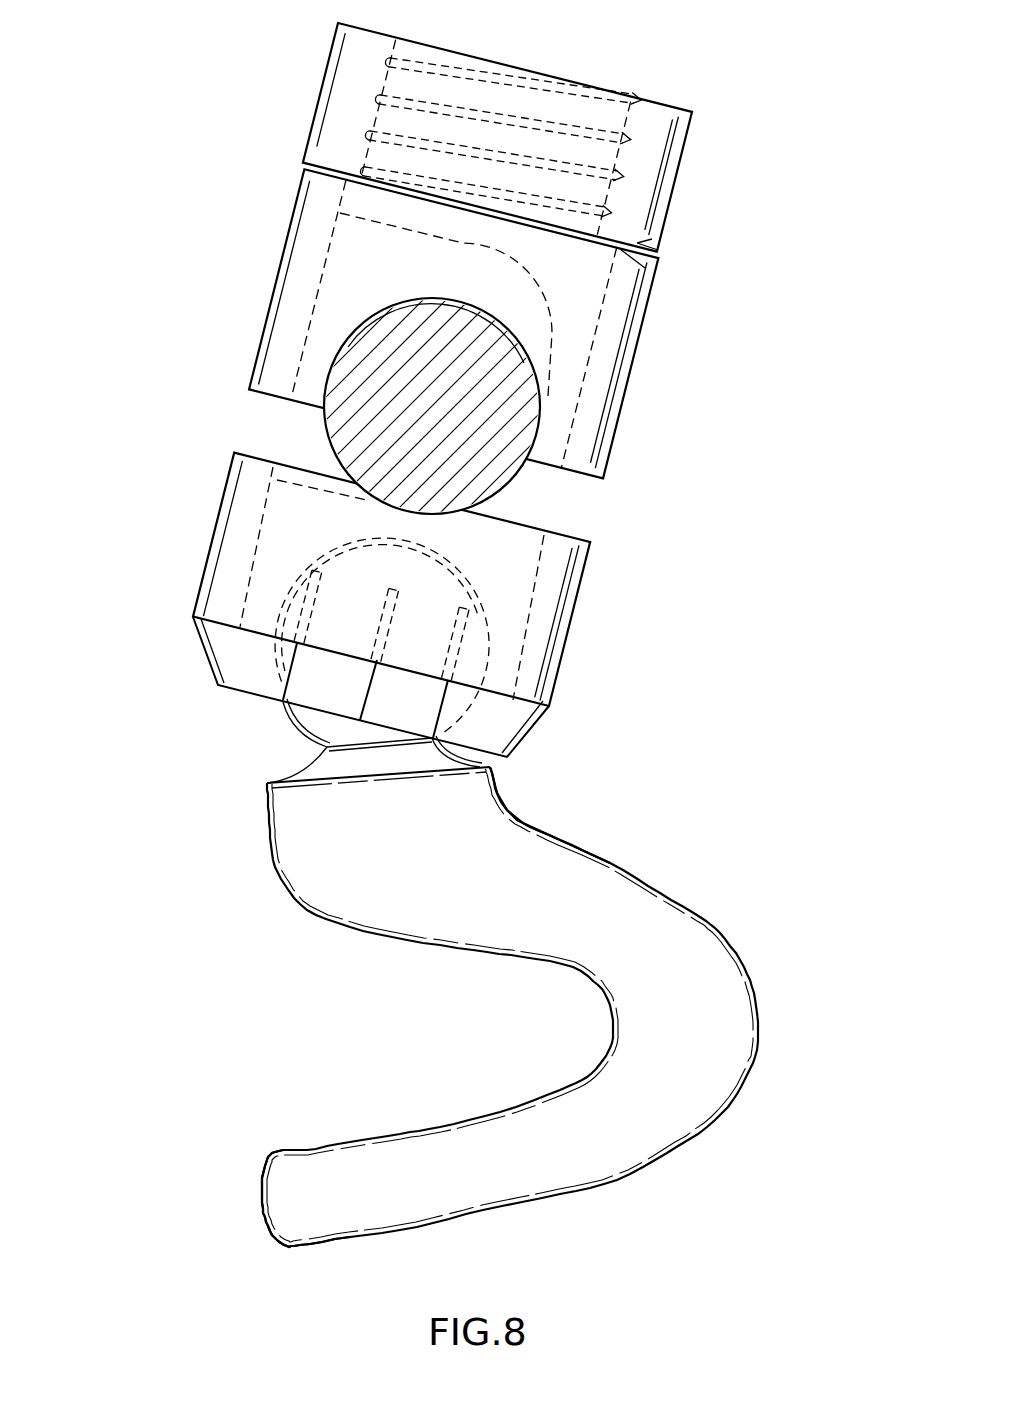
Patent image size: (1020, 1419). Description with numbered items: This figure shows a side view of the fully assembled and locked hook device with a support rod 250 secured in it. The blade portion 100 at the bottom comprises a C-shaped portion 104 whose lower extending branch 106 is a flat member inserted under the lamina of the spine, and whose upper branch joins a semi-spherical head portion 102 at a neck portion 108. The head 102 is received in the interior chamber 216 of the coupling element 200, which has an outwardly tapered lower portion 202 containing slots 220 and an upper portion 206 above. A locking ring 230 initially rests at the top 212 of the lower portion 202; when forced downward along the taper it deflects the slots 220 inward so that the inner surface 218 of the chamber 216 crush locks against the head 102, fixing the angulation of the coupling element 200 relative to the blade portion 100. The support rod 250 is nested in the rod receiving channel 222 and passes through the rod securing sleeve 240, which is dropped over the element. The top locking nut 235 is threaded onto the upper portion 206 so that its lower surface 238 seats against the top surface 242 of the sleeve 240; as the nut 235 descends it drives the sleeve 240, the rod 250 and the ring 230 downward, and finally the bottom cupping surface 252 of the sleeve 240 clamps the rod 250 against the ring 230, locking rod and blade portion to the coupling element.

The blade portion 100 is at (263, 962).
The head portion 102 is at (320, 727).
The C-shaped portion 104 is at (700, 1029).
The lower extending branch 106 is at (300, 1210).
The neck portion 108 is at (477, 799).
The coupling element 200 is at (199, 196).
The lower portion 202 is at (243, 685).
The upper portion 206 is at (497, 137).
The top 212 is at (391, 579).
The interior chamber 216 is at (322, 633).
The inner surface 218 is at (283, 587).
The slots 220 is at (381, 625).
The rod receiving channel 222 is at (453, 323).
The locking ring 230 is at (556, 622).
The top locking nut 235 is at (661, 176).
The lower surface 238 is at (637, 243).
The rod securing sleeve 240 is at (618, 364).
The top surface 242 is at (627, 253).
The support rod 250 is at (360, 442).
The bottom cupping surface 252 is at (377, 317).